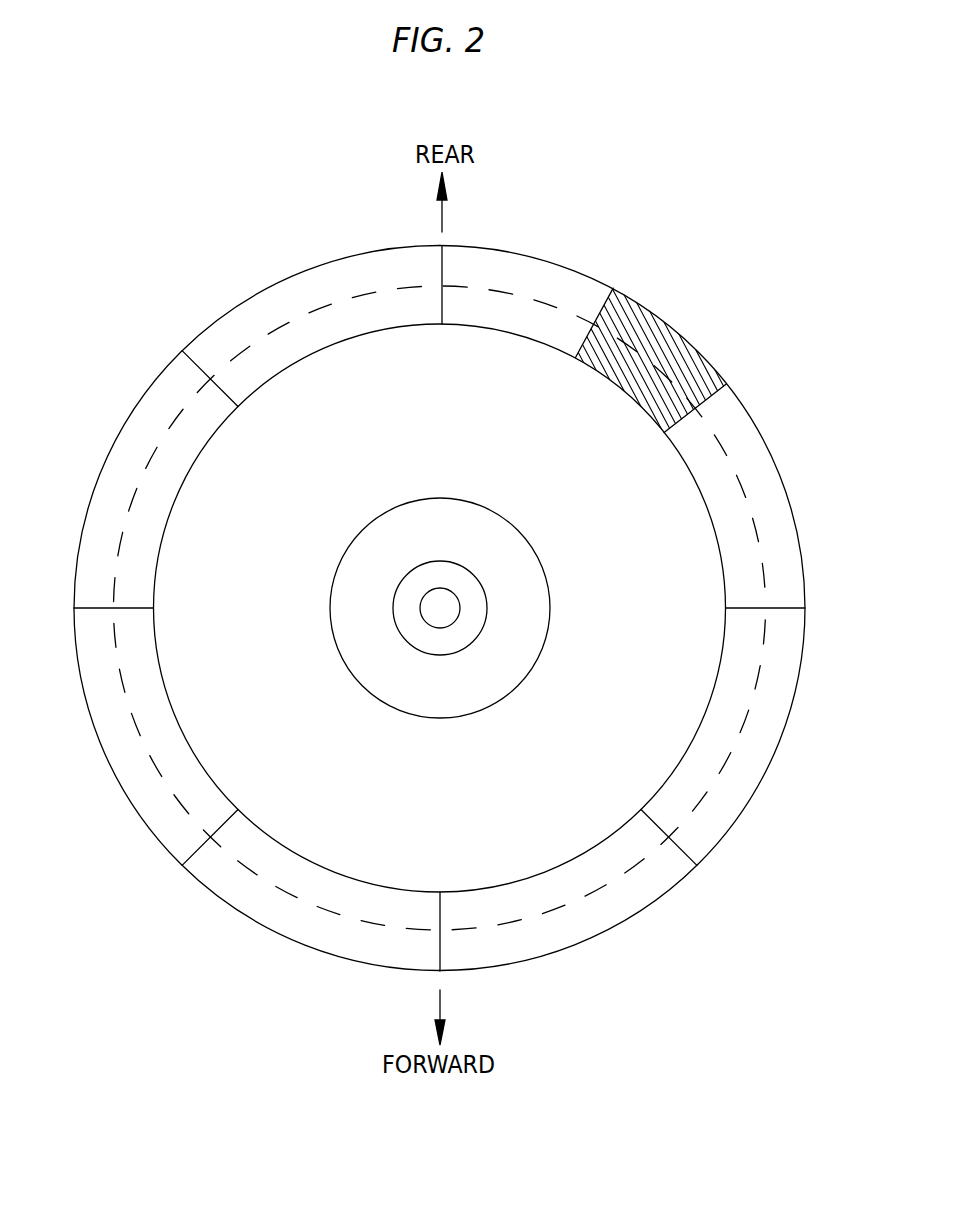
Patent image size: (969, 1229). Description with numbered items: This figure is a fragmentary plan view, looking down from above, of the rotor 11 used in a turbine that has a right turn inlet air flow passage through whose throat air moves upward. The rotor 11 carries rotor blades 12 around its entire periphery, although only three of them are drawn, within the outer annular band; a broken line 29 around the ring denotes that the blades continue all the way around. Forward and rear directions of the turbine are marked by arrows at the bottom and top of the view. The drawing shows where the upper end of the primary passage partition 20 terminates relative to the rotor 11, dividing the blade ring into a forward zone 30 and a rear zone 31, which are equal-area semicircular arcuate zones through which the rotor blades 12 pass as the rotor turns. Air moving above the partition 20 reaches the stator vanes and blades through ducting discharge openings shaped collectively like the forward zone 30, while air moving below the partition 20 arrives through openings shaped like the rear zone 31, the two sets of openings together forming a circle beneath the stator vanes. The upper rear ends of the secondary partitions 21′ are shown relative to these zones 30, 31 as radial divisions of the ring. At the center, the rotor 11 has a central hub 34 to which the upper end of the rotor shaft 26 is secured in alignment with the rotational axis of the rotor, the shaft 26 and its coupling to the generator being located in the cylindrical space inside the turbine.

The rotor 11 is at (656, 756).
The rotor blades 12 is at (630, 322).
The primary passage partition 20 is at (97, 607).
The secondary partition 21′ is at (442, 955).
The rotor shaft 26 is at (440, 607).
The pitch circle 29 is at (300, 318).
The forward zone 30 is at (308, 926).
The rear zone 31 is at (739, 435).
The central hub 34 is at (493, 545).